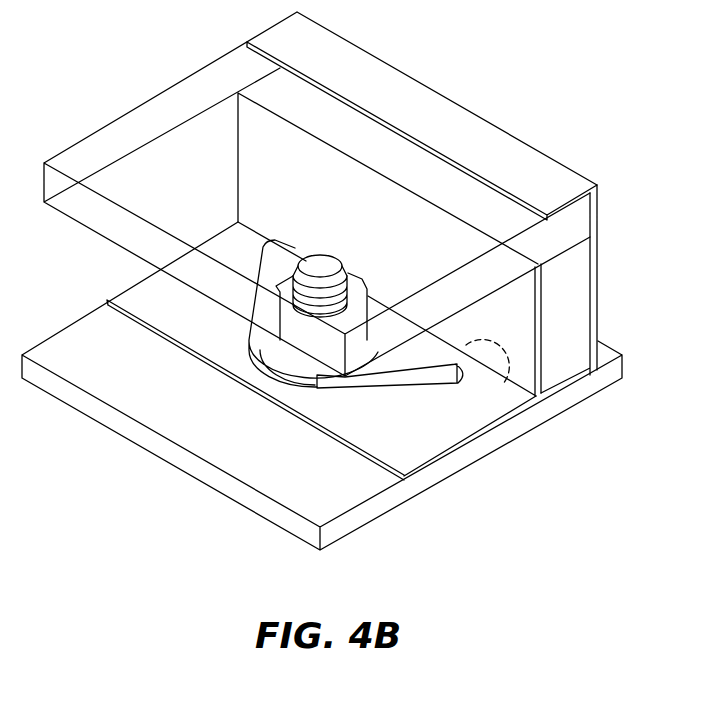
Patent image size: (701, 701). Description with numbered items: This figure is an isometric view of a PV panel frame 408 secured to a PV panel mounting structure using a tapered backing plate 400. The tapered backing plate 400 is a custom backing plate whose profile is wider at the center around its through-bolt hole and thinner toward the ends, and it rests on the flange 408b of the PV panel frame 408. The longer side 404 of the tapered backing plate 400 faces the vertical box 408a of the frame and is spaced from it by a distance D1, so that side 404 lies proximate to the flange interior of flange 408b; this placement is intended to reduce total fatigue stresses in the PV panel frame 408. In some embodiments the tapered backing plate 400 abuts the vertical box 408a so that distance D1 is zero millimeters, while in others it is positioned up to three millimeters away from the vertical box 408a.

The tapered backing plate 400 is at (244, 254).
The side 404 is at (291, 254).
The PV panel frame 408 is at (362, 246).
The vertical box 408a is at (541, 337).
The flange 408b is at (166, 337).
The distance D1 is at (492, 385).